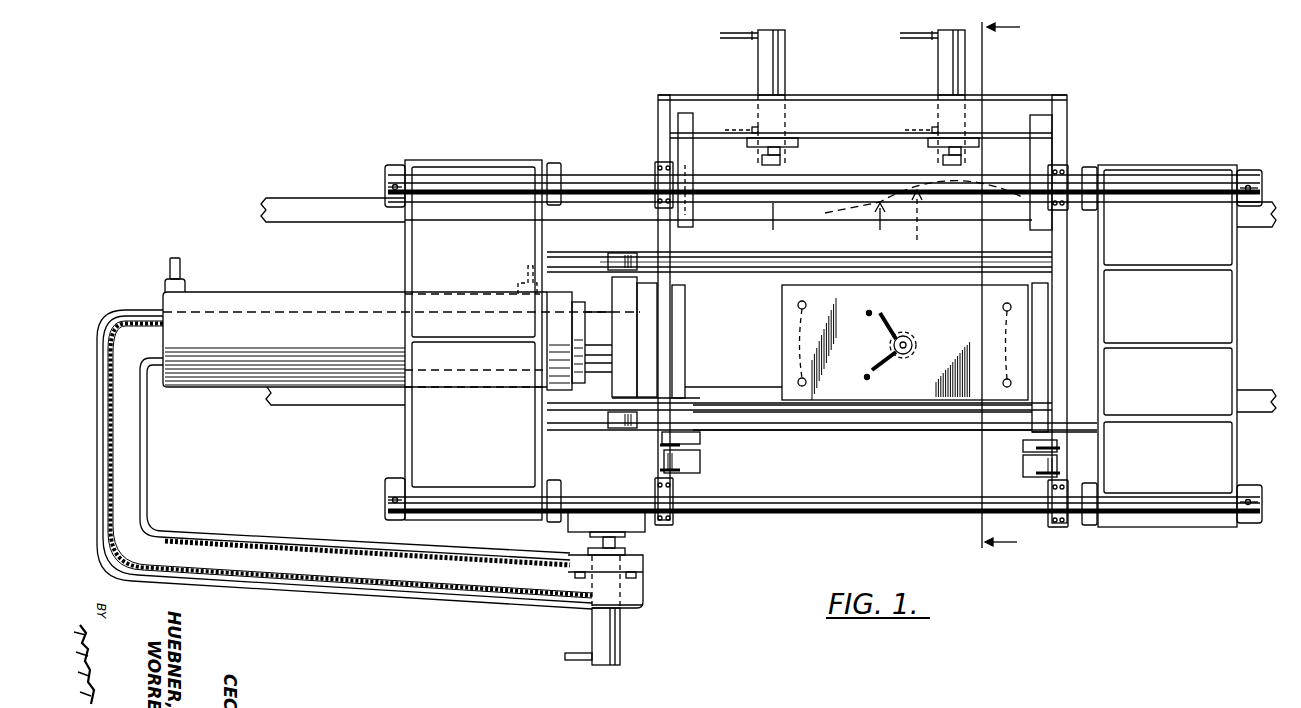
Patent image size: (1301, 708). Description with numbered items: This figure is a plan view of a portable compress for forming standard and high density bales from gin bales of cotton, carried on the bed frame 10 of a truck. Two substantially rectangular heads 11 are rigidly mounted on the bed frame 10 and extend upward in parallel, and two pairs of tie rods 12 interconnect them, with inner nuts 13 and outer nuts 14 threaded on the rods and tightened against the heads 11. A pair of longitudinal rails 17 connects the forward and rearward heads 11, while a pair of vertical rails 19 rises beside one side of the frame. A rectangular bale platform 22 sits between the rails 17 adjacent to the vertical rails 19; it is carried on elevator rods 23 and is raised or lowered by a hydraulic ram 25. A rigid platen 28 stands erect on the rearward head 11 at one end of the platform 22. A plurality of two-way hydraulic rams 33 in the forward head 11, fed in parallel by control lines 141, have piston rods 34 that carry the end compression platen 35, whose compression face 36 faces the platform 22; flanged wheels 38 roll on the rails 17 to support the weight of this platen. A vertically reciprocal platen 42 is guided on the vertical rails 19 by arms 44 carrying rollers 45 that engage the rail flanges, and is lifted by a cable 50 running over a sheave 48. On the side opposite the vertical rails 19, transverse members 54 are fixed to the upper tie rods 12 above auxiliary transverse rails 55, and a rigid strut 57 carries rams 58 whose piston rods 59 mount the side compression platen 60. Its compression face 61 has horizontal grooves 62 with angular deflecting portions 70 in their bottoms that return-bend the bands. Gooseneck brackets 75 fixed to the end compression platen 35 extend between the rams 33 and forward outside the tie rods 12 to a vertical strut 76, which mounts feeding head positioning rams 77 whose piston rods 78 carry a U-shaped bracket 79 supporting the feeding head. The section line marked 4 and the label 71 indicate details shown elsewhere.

The section line 4- 4 is at (1001, 297).
The bed frame 10 is at (300, 202).
The heads 11 is at (428, 242).
The tie rods 12 is at (631, 185).
The inner nuts 13 is at (553, 175).
The outer nuts 14 is at (396, 180).
The rails 17 is at (700, 263).
The vertical rails 19 is at (665, 457).
The bale platform 22 is at (790, 312).
The elevator rods 23 is at (900, 345).
The hydraulic ram 25 is at (915, 340).
The platen 28 is at (1040, 312).
The two-way hydraulic rams 33 is at (268, 300).
The piston rods 34 is at (600, 328).
The end compression platen 35 is at (678, 282).
The compression face 36 is at (686, 328).
The flanged wheels 38 is at (618, 260).
The vertically reciprocal platen 42 is at (793, 420).
The arms 44 is at (700, 438).
The rollers 45 is at (700, 462).
The sheave 48 is at (755, 404).
The cable 50 is at (862, 422).
The transverse members 54 is at (664, 135).
The auxiliary transverse rails 55 is at (685, 115).
The rigid strut 57 is at (848, 108).
The rams 58 is at (780, 66).
The piston rods 59 is at (790, 148).
The side compression platen 60 is at (773, 230).
The compression face 61 is at (758, 268).
The horizontal grooves 62 is at (918, 221).
The angular deflecting portions 70 is at (923, 216).
The path 71 is at (1007, 205).
The gooseneck brackets 75 is at (330, 556).
The vertical strut 76 is at (640, 563).
The feeding head positioning rams 77 is at (615, 637).
The piston rods 78 is at (618, 541).
The U-shaped bracket 79 is at (580, 522).
The control lines 141 is at (184, 268).